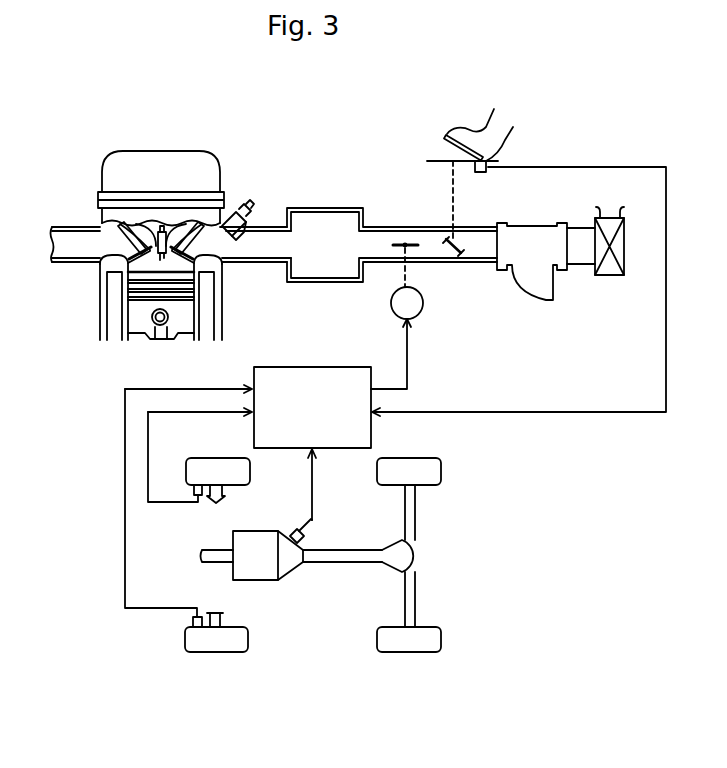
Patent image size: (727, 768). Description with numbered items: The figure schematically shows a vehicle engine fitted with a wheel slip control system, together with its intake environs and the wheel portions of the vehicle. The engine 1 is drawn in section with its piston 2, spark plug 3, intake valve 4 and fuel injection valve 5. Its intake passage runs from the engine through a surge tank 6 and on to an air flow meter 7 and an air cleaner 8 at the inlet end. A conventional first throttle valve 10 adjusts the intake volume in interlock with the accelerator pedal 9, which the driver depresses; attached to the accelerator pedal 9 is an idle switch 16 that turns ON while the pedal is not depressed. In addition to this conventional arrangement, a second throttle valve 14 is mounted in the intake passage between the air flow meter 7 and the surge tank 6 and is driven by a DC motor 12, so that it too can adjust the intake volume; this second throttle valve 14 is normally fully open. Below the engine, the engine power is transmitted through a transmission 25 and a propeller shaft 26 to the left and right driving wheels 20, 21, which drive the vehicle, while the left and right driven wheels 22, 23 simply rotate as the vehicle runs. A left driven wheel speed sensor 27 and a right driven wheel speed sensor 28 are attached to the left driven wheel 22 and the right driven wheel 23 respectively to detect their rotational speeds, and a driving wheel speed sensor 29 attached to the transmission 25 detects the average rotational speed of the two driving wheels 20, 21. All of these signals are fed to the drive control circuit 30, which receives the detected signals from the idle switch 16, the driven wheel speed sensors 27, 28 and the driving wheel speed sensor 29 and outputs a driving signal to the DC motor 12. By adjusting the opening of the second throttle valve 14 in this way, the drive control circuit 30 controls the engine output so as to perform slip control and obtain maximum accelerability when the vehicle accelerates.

The engine 1 is at (180, 147).
The piston 2 is at (191, 339).
The spark plug 3 is at (166, 227).
The intake valve 4 is at (221, 260).
The fuel injection valve 5 is at (253, 206).
The surge tank 6 is at (324, 284).
The air flow meter 7 is at (534, 296).
The air cleaner 8 is at (600, 278).
The accelerator pedal 9 is at (445, 137).
The first throttle valve 10 is at (453, 257).
The DC motor 12 is at (417, 319).
The second throttle valve 14 is at (404, 242).
The idle switch 16 is at (480, 174).
The left driving wheel 20 is at (405, 653).
The right driving wheel 21 is at (392, 458).
The left driven wheel 22 is at (205, 653).
The right driven wheel 23 is at (208, 457).
The transmission 25 is at (262, 581).
The propeller shaft 26 is at (327, 563).
The left driven wheel speed sensor 27 is at (192, 621).
The right driven wheel speed sensor 28 is at (193, 492).
The driving wheel speed sensor 29 is at (305, 536).
The drive control circuit 30 is at (341, 366).